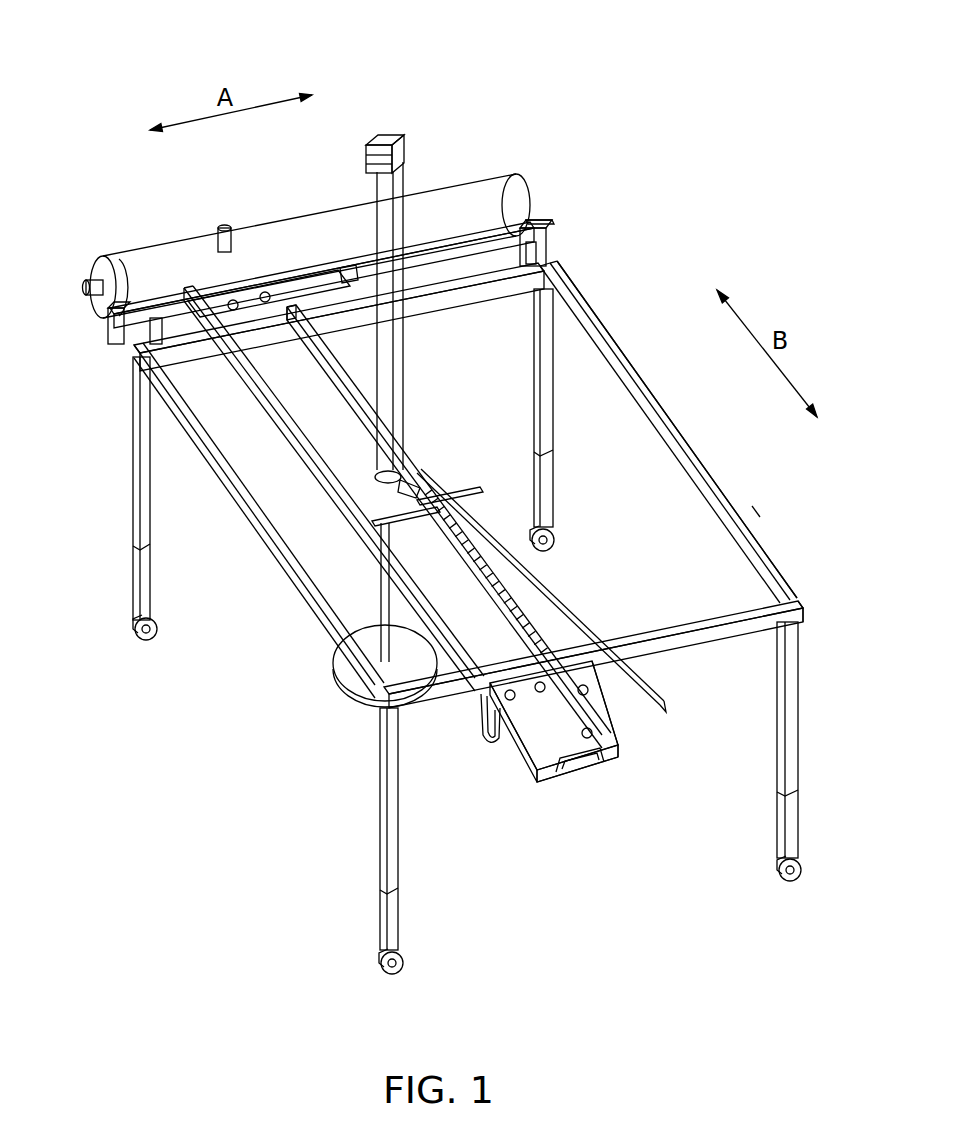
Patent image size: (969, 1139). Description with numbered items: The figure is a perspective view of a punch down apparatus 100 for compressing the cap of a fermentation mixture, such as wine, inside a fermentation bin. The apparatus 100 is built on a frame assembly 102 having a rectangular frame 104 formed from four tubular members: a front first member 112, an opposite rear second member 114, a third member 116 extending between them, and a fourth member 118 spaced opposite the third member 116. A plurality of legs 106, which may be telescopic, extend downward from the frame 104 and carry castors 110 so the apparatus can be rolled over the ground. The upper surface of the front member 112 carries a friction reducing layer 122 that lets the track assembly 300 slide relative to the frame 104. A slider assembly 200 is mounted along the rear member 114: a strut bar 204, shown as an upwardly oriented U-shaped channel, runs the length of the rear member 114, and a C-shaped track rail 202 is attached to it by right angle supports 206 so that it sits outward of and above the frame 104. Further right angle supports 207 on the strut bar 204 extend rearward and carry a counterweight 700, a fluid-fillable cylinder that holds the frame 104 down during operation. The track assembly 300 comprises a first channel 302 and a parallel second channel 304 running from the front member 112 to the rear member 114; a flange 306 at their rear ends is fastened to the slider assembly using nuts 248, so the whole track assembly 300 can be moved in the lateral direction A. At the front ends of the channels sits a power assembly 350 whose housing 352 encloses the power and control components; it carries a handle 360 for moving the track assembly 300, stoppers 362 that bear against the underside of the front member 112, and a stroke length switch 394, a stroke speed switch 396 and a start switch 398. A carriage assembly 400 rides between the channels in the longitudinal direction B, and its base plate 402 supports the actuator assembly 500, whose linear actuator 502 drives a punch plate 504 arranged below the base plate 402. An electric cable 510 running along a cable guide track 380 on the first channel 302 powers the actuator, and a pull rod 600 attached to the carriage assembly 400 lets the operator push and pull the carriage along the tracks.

The punch down apparatus 100 is at (630, 288).
The frame assembly 102 is at (754, 505).
The frame 104 is at (719, 494).
The legs 106 is at (140, 500).
The castors 110 is at (140, 622).
The first member 112 is at (740, 628).
The second member 114 is at (145, 380).
The third member 116 is at (646, 392).
The fourth member 118 is at (200, 443).
The friction reducing layer 122 is at (782, 583).
The slider assembly 200 is at (164, 295).
The track rail 202 is at (536, 222).
The strut bar 204 is at (137, 352).
The right angle supports 206 is at (404, 134).
The right angle supports 207 is at (345, 258).
The nuts 248 is at (233, 299).
The track assembly 300 is at (318, 476).
The first channel 302 is at (310, 318).
The second channel 304 is at (412, 660).
The flange 306 is at (208, 298).
The power assembly 350 is at (528, 768).
The housing 352 is at (560, 786).
The handle 360 is at (586, 772).
The stoppers 362 is at (479, 738).
The cable guide track 380 is at (548, 622).
The stroke length switch 394 is at (528, 718).
The stroke speed switch 396 is at (598, 733).
The start switch 398 is at (622, 754).
The carriage assembly 400 is at (412, 522).
The base plate 402 is at (287, 423).
The actuator assembly 500 is at (388, 397).
The linear actuator 502 is at (404, 466).
The punch plate 504 is at (340, 692).
The electric cable 510 is at (401, 352).
The pull rod 600 is at (632, 672).
The counterweight 700 is at (472, 190).